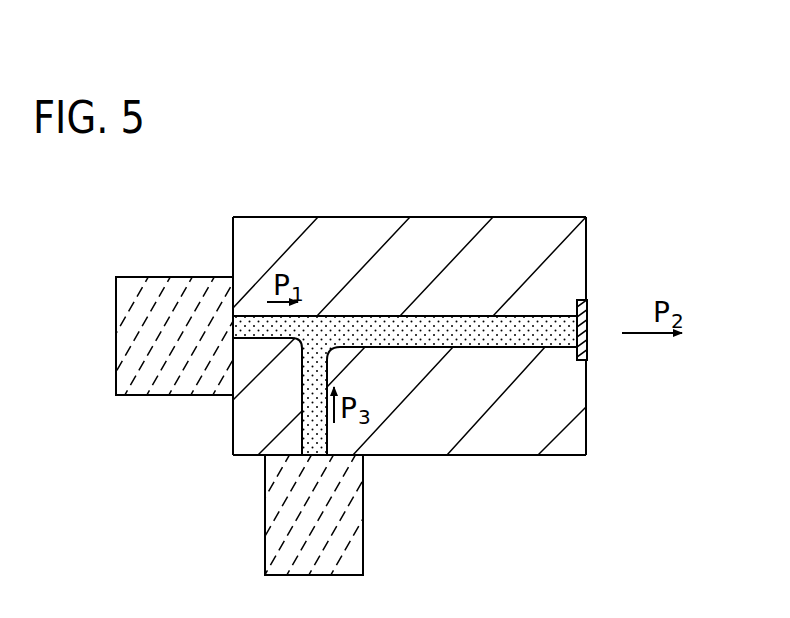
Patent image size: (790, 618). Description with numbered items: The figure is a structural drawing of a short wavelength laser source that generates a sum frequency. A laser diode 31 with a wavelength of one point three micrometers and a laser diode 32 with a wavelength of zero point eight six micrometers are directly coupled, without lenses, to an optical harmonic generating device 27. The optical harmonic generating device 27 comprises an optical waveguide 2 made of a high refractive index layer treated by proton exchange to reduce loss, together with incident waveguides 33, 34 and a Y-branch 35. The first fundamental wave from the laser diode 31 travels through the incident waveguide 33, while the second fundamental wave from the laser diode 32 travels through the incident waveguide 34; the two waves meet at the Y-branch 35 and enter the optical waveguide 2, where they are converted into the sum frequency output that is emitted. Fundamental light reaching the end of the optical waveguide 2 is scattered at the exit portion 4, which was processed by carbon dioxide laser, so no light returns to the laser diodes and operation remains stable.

The optical waveguide 2 is at (440, 327).
The exit portion 4 is at (585, 313).
The optical harmonic generating device 27 is at (535, 233).
The laser diode 31 is at (160, 292).
The laser diode 32 is at (340, 522).
The incident waveguide 33 is at (253, 316).
The incident waveguide 34 is at (307, 410).
The Y-branch 35 is at (318, 316).